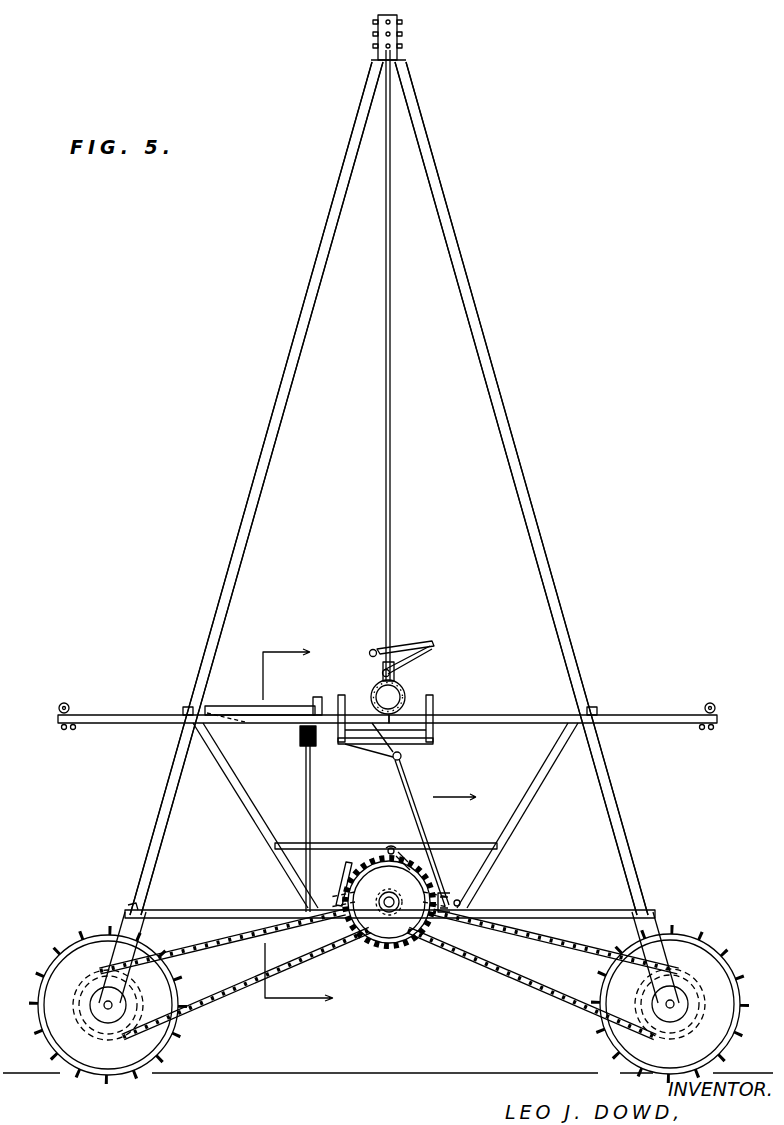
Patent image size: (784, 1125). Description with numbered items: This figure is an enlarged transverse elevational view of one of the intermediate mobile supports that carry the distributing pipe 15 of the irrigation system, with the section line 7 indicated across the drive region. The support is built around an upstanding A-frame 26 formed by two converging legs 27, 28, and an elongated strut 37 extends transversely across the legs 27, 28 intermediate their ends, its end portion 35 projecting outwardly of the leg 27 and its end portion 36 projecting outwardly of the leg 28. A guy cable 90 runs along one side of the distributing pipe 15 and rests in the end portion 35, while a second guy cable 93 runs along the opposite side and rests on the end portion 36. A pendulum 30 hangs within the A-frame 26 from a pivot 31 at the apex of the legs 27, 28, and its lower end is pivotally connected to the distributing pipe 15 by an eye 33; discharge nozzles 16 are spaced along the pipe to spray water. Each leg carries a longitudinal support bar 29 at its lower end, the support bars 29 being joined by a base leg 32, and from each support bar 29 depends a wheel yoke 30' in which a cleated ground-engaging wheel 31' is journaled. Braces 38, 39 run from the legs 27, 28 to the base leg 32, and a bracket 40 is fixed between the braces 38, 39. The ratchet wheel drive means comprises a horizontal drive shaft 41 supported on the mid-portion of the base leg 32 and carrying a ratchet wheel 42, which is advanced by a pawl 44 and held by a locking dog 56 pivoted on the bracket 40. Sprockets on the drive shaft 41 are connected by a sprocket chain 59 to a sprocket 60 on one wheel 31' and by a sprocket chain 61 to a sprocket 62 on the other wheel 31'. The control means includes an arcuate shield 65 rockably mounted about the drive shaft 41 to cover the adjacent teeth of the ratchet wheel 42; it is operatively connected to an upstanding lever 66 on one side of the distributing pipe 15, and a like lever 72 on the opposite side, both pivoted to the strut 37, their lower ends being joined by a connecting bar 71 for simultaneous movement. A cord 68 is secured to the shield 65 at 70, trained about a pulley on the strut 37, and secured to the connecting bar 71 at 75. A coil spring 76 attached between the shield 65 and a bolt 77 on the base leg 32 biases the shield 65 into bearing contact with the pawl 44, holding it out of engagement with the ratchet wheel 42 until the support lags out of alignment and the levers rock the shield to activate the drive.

The section line 7- 7 is at (298, 825).
The distributing pipe 15 is at (373, 690).
The discharge nozzles 16 is at (433, 645).
The A-frame 26 is at (478, 295).
The leg 27 is at (216, 604).
The leg 28 is at (522, 512).
The support bar 29 is at (126, 912).
The pendulum 30 is at (407, 365).
The wheel yoke 30' is at (367, 949).
The pivotal support of pendulum 31 is at (412, 37).
The cleated ground-engaging wheel 31' is at (408, 1005).
The base leg 32 is at (540, 910).
The eye 33 is at (404, 672).
The end portion of strut 35 is at (117, 714).
The end portion of strut 36 is at (640, 714).
The strut 37 is at (498, 712).
The brace 38 is at (248, 808).
The brace 39 is at (561, 815).
The bracket 40 is at (465, 842).
The drive shaft 41 is at (393, 940).
The ratchet wheel 42 is at (374, 847).
The pawl 44 is at (352, 882).
The locking dog 56 is at (406, 854).
The sprocket chain 59 is at (318, 950).
The sprocket 60 is at (95, 1040).
The sprocket chain 61 is at (536, 980).
The sprocket 62 is at (620, 1032).
The arcuate shield 65 is at (386, 950).
The upstanding lever 66 is at (436, 705).
The cord 68 is at (410, 795).
The cord attachment on shield 70 is at (444, 897).
The connecting bar 71 is at (420, 748).
The lever 72 is at (320, 700).
The cord attachment on connecting bar 75 is at (334, 756).
The coil spring 76 is at (474, 908).
The bolt 77 is at (452, 921).
The cable 90 is at (61, 707).
The cable 93 is at (716, 706).